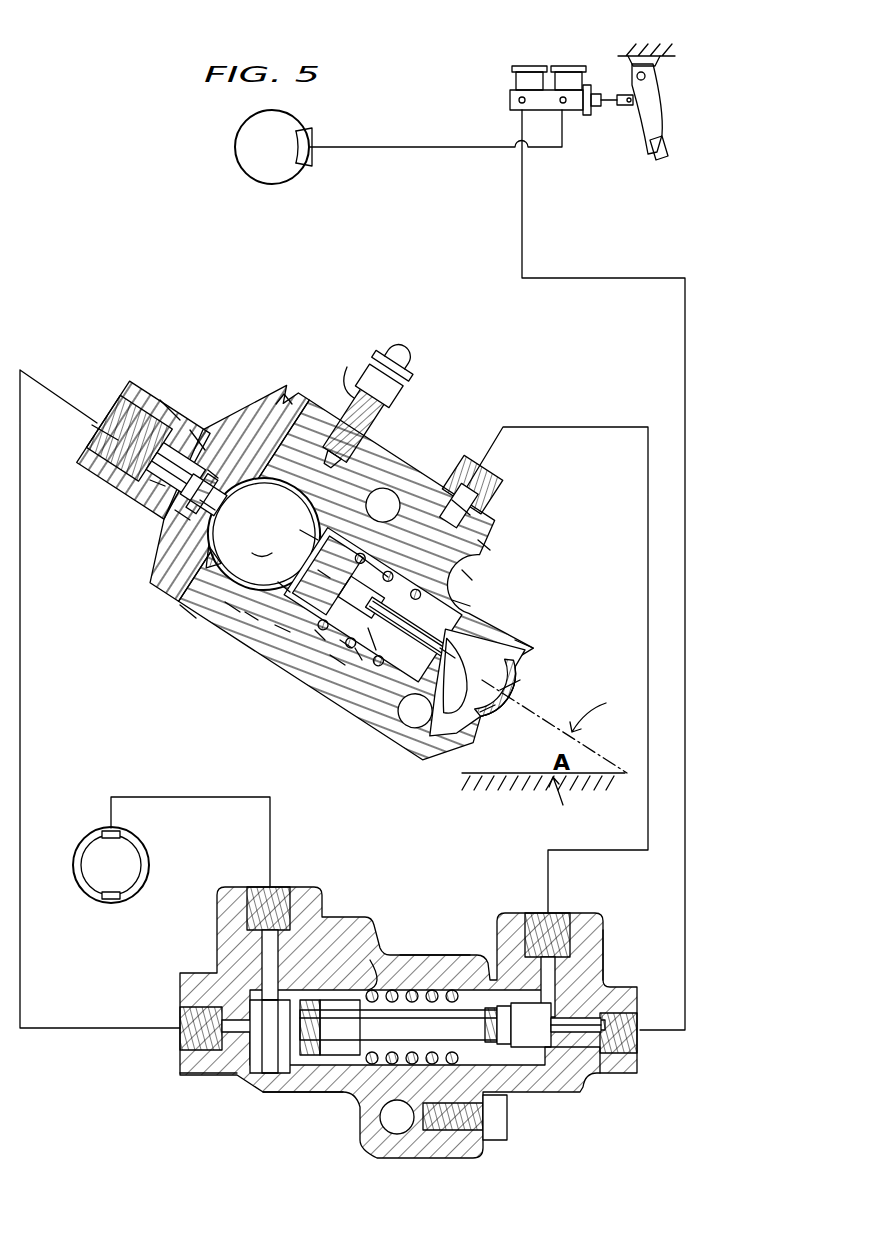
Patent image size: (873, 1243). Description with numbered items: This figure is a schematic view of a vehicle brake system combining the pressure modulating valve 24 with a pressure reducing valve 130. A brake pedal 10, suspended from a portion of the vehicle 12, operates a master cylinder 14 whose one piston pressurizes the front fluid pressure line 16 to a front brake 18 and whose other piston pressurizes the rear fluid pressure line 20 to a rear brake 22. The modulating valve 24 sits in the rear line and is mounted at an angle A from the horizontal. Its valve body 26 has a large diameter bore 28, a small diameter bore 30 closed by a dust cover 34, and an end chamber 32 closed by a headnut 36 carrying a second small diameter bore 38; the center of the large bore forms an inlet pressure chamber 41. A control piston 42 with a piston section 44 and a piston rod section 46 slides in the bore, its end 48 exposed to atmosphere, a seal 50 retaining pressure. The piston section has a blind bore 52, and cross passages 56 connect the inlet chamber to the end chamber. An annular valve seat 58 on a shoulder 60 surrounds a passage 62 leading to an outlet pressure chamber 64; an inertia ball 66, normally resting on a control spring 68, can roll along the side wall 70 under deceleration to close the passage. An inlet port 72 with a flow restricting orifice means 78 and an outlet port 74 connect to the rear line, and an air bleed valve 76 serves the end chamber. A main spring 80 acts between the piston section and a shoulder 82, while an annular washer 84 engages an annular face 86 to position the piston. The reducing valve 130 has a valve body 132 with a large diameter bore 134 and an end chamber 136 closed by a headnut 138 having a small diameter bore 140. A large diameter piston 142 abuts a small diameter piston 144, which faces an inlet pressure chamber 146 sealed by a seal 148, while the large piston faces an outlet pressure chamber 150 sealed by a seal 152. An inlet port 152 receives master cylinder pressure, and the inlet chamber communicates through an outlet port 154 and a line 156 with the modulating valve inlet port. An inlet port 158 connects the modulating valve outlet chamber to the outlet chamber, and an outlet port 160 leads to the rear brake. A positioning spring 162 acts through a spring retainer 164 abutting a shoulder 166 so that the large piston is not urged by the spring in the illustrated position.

The brake pedal 10 is at (668, 150).
The portion of the vehicle 12 is at (668, 50).
The master cylinder 14 is at (510, 100).
The front fluid pressure line 16 is at (552, 147).
The front brake 18 is at (312, 145).
The rear fluid pressure line 20 is at (686, 520).
The rear brake 22 is at (108, 830).
The modulating valve 24 is at (285, 402).
The valve body 26 is at (412, 456).
The large diameter bore 28 is at (340, 652).
The small diameter bore 30 is at (485, 712).
The end chamber 32 is at (196, 615).
The dust cover 34 is at (512, 685).
The headnut 36 is at (162, 410).
The second small diameter bore 38 is at (200, 445).
The inlet pressure chamber 41 is at (350, 648).
The control piston 42 is at (381, 655).
The piston section 44 is at (288, 630).
The piston rod section 46 is at (446, 648).
The end of piston rod section 48 is at (508, 640).
The seal 50 is at (468, 605).
The blind bore 52 is at (330, 578).
The cross passages 56 is at (380, 558).
The annular valve seat 58 is at (202, 512).
The shoulder 60 is at (185, 518).
The passage 62 is at (212, 476).
The outlet pressure chamber 64 is at (165, 486).
The inertia ball 66 is at (264, 542).
The control spring 68 is at (322, 553).
The side wall 70 is at (238, 606).
The inlet port 72 is at (468, 505).
The outlet port 74 is at (105, 428).
The air bleed valve 76 is at (350, 400).
The flow restricting orifice means 78 is at (472, 545).
The main spring 80 is at (360, 660).
The shoulder 82 is at (466, 574).
The annular washer 84 is at (258, 618).
The annular face 86 is at (292, 590).
The pressure reducing valve 130 is at (339, 1112).
The valve body 132 is at (408, 952).
The large diameter bore 134 is at (330, 1000).
The end chamber 136 is at (422, 1026).
The headnut 138 is at (605, 958).
The small diameter bore 140 is at (490, 1042).
The large diameter piston 142 is at (310, 1080).
The small diameter piston 144 is at (531, 1040).
The inlet pressure chamber 146 is at (597, 1060).
The seal 148 is at (552, 1070).
The outlet pressure chamber 150 is at (250, 1080).
The inlet port 152 is at (270, 1000).
The outlet port 154 is at (553, 920).
The line 156 is at (648, 570).
The inlet port 158 is at (182, 1045).
The outlet port 160 is at (268, 893).
The positioning spring 162 is at (448, 990).
The spring retainer 164 is at (372, 965).
The shoulder 166 is at (380, 1108).